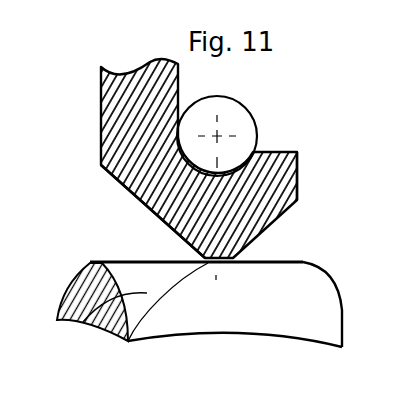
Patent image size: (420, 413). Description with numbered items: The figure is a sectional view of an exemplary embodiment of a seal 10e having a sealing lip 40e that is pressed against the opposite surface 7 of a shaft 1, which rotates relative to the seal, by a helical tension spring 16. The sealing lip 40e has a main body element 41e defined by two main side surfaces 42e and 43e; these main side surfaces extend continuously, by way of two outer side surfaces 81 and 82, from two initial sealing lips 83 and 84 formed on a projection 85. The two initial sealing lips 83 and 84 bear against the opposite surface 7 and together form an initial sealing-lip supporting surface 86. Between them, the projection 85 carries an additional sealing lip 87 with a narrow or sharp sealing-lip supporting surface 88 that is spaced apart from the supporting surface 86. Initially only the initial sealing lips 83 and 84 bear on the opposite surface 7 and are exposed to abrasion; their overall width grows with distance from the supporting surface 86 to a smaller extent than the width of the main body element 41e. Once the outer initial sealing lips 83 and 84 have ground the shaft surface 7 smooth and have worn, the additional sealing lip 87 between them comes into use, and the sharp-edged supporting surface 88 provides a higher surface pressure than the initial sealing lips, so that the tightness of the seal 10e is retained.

The shaft 1 is at (83, 322).
The opposite surface 7 is at (128, 262).
The seal 10e is at (98, 127).
The helical tension spring 16 is at (238, 118).
The sealing lip 40e is at (128, 196).
The main body element 41e is at (302, 178).
The main side surface 42e is at (212, 261).
The main side surface 43e is at (222, 260).
The outer side surface 81 is at (210, 261).
The outer side surface 82 is at (219, 262).
The initial sealing lip 83 is at (129, 343).
The initial sealing lip 84 is at (219, 261).
The projection 85 is at (212, 261).
The initial sealing-lip supporting surface 86 is at (222, 263).
The additional sealing lip 87 is at (222, 264).
The sealing-lip supporting surface 88 is at (214, 265).